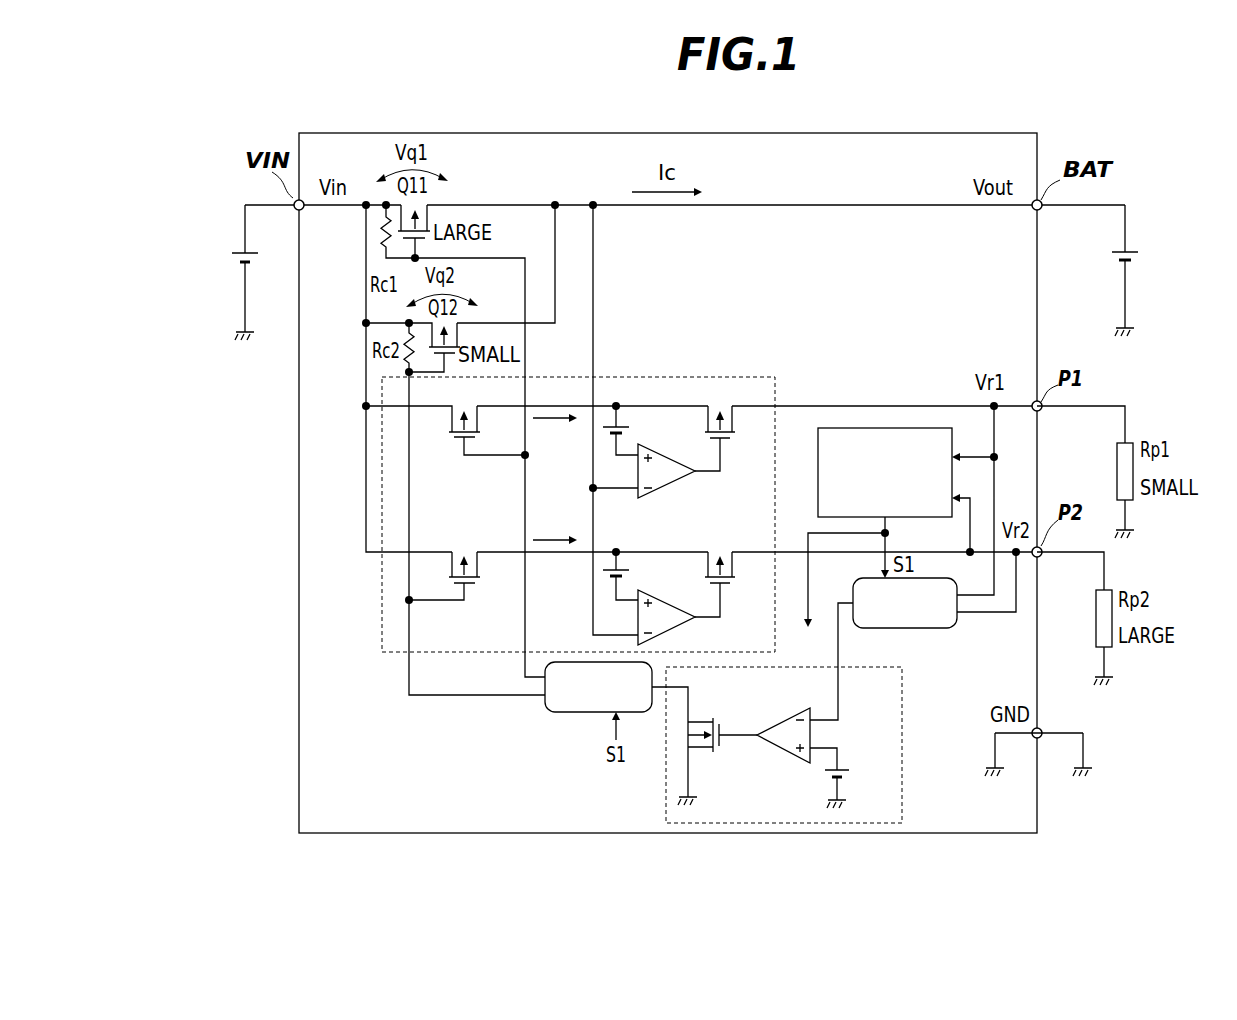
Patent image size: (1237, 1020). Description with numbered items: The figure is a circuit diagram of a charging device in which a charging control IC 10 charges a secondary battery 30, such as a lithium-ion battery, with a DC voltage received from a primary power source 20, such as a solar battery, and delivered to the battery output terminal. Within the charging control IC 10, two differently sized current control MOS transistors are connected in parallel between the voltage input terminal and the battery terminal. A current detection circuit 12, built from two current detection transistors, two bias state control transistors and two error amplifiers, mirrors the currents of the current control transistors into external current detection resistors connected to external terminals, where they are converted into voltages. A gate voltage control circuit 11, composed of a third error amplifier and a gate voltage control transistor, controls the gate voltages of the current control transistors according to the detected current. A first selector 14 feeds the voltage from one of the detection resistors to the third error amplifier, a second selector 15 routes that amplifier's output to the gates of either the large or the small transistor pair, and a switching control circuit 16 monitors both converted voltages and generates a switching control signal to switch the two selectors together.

The charging control IC 10 is at (806, 133).
The gate voltage control circuit 11 is at (666, 797).
The current detection circuit 12 is at (683, 376).
The selector 14 is at (910, 630).
The selector 15 is at (580, 714).
The switching control circuit 16 is at (818, 470).
The primary power source 20 is at (236, 241).
The secondary battery 30 is at (1130, 247).